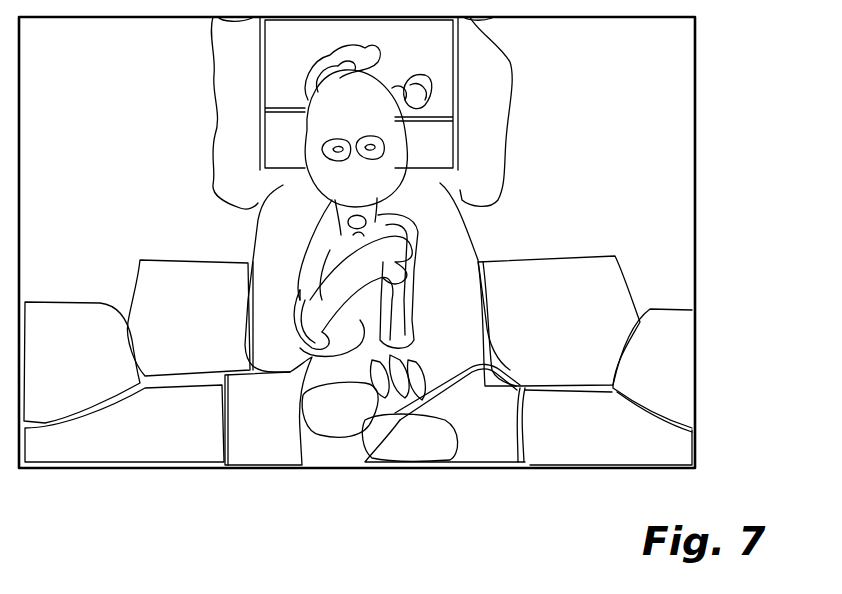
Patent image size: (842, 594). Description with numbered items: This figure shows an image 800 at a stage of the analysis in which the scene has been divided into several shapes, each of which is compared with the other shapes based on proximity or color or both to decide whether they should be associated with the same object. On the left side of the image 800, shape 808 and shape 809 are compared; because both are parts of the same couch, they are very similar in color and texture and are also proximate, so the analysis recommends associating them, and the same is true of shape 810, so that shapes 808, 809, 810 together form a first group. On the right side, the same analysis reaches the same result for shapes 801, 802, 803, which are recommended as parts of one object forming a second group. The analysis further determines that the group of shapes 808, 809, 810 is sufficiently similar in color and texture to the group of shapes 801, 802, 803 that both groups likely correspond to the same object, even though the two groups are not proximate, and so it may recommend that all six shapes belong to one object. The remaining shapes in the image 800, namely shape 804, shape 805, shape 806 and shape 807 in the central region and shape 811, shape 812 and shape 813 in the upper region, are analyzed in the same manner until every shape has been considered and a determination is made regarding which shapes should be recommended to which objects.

The image 800 is at (734, 185).
The shape 801 is at (559, 321).
The shape 802 is at (608, 427).
The shape 803 is at (652, 370).
The person segment 804 is at (377, 208).
The arm segment 805 is at (340, 296).
The leg segment 806 is at (413, 408).
The sofa seat segment 807 is at (268, 411).
The shape 808 is at (190, 318).
The shape 809 is at (124, 423).
The shape 810 is at (82, 362).
The wall segment 811 is at (174, 113).
The wall segment 812 is at (541, 111).
The window segment 813 is at (359, 93).